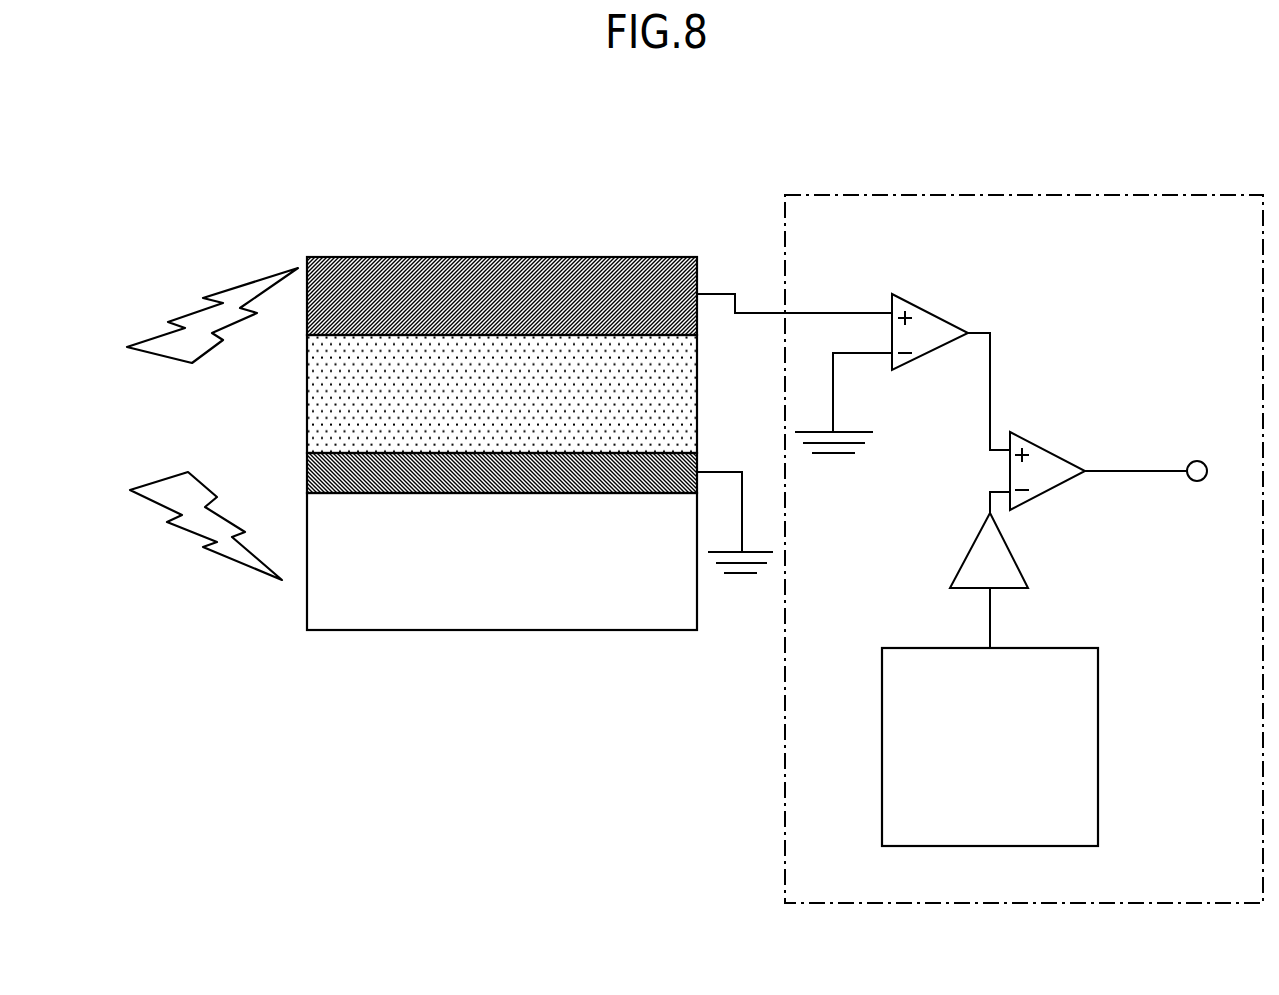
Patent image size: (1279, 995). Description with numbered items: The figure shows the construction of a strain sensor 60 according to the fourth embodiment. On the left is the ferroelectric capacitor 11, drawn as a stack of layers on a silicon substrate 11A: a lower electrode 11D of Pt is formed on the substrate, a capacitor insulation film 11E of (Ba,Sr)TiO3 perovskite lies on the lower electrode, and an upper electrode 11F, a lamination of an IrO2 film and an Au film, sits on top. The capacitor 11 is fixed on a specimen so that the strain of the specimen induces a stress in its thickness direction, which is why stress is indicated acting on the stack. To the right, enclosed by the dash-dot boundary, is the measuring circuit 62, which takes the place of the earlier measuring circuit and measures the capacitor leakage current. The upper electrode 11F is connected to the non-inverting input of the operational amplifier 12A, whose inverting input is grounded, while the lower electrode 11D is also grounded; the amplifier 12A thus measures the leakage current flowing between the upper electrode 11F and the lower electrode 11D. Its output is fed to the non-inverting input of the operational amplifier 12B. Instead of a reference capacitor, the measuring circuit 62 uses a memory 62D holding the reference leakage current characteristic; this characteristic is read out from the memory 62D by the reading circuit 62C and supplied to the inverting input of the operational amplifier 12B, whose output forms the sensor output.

The strain sensor 60 is at (759, 84).
The ferroelectric capacitor 11 is at (506, 228).
The upper electrode 11F is at (601, 255).
The capacitor insulation film 11E is at (305, 404).
The lower electrode 11D is at (428, 490).
The silicon substrate 11A is at (567, 617).
The measuring circuit 62 is at (1133, 195).
The operational amplifier 12A is at (933, 312).
The operational amplifier 12B is at (1030, 437).
The reading circuit 62C is at (1012, 553).
The memory 62D is at (1098, 752).